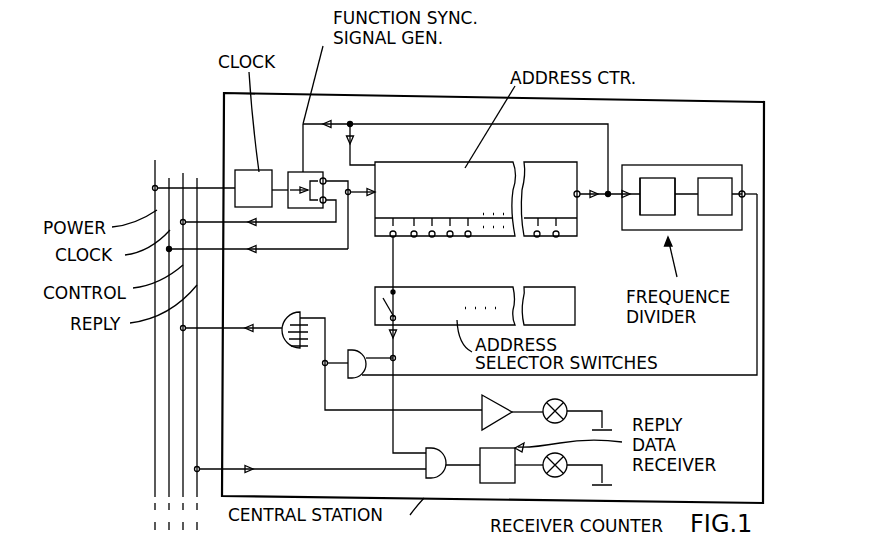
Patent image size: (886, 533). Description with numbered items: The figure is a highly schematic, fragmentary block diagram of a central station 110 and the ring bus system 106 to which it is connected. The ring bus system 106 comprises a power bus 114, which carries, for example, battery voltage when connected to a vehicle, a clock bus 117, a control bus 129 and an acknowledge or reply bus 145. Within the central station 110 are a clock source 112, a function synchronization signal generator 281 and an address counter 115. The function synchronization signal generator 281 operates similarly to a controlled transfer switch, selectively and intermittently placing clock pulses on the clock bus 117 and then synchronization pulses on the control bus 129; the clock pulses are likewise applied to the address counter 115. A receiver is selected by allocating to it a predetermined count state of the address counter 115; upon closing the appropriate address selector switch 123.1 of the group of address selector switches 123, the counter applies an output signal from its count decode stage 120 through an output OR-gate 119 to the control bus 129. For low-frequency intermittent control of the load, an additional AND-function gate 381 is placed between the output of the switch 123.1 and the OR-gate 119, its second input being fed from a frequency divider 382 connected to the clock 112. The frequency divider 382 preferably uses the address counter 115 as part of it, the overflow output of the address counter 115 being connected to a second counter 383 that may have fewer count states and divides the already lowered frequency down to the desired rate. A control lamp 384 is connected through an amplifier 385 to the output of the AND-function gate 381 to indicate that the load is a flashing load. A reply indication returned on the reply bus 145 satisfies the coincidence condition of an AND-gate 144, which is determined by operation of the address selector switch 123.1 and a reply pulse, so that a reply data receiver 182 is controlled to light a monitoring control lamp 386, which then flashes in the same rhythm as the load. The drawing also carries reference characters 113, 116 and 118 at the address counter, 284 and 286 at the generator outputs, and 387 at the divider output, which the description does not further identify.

The ring bus system 106 is at (218, 125).
The central station 110 is at (252, 117).
The clock source 112 is at (261, 178).
The address counter 113 is at (378, 163).
The power bus 114 is at (156, 160).
The address counter 115 is at (428, 163).
The counter input 116 is at (373, 197).
The clock bus 117 is at (169, 178).
The counter output 118 is at (578, 190).
The output OR-gate 119 is at (286, 317).
The count decode stage 120 is at (396, 342).
The address selector switches 123 is at (575, 310).
The address selector switch 123.1 is at (415, 305).
The control bus 129 is at (183, 173).
The AND-gate 144 is at (340, 453).
The reply bus 145 is at (197, 178).
The reply data receiver 182 is at (486, 479).
The function synchronization signal generator 281 is at (292, 172).
The generator clock output 284 is at (324, 204).
The generator control output 286 is at (325, 178).
The AND-function gate 381 is at (356, 379).
The frequency divider 382 is at (632, 240).
The second counter 383 is at (672, 165).
The control lamp 384 is at (561, 405).
The amplifier 385 is at (482, 406).
The monitoring control lamp 386 is at (562, 464).
The divider output 387 is at (744, 190).